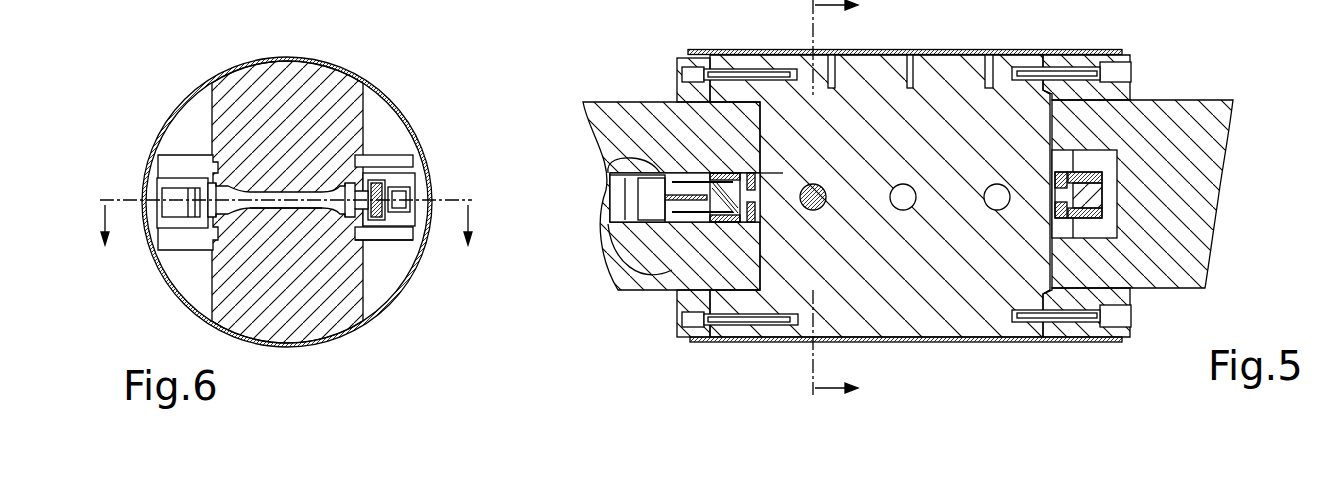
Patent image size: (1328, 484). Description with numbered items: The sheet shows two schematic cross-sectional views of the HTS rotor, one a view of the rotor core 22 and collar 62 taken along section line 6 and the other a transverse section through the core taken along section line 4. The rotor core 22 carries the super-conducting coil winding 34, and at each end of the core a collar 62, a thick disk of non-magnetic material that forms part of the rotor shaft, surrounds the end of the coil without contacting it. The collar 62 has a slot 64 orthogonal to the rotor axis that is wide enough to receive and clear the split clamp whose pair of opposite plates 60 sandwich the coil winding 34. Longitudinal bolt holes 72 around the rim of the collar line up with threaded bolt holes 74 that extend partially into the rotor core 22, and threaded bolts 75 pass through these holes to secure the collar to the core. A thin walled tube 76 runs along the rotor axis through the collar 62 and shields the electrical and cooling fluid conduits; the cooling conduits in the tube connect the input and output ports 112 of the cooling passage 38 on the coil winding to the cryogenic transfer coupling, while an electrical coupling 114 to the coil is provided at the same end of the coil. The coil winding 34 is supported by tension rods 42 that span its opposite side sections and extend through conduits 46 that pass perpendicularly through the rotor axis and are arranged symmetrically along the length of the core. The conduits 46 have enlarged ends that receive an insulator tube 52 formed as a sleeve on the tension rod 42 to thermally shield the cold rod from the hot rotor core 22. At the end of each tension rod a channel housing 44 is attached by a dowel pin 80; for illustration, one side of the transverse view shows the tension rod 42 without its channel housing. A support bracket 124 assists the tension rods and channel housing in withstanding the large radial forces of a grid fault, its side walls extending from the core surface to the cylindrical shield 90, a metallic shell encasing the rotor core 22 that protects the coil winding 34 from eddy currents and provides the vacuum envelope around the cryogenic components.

In FIG. 6, the section line 4- 4 is at (284, 236).
In FIG. 5, the section line 6- 6 is at (845, 200).
In FIG. 6, the rotor core 22 is at (333, 95).
In FIG. 5, the rotor core 22 is at (947, 258).
In FIG. 6, the coil winding 34 is at (172, 198).
In FIG. 5, the coil winding 34 is at (725, 178).
In FIG. 5, the cooling passage 38 is at (1100, 192).
In FIG. 6, the tension rod 42 is at (270, 192).
In FIG. 5, the tension rod 42 is at (818, 186).
In FIG. 6, the channel housing 44 is at (400, 192).
In FIG. 5, the conduit 46 is at (893, 190).
In FIG. 6, the insulator tube 52 is at (327, 222).
In FIG. 5, the plates 60 is at (783, 172).
In FIG. 5, the collar 62 is at (618, 118).
In FIG. 5, the slot 64 is at (705, 175).
In FIG. 5, the bolt holes 72 is at (718, 66).
In FIG. 5, the threaded bolt holes 74 is at (778, 70).
In FIG. 5, the threaded bolts 75 is at (680, 72).
In FIG. 5, the thin walled tube 76 is at (628, 165).
In FIG. 6, the dowel pin 80 is at (372, 182).
In FIG. 6, the cylindrical shield 90 is at (283, 56).
In FIG. 5, the cylindrical shield 90 is at (985, 342).
In FIG. 5, the input and output ports 112 is at (620, 262).
In FIG. 5, the electrical coupling 114 is at (677, 300).
In FIG. 6, the support bracket 124 is at (409, 240).